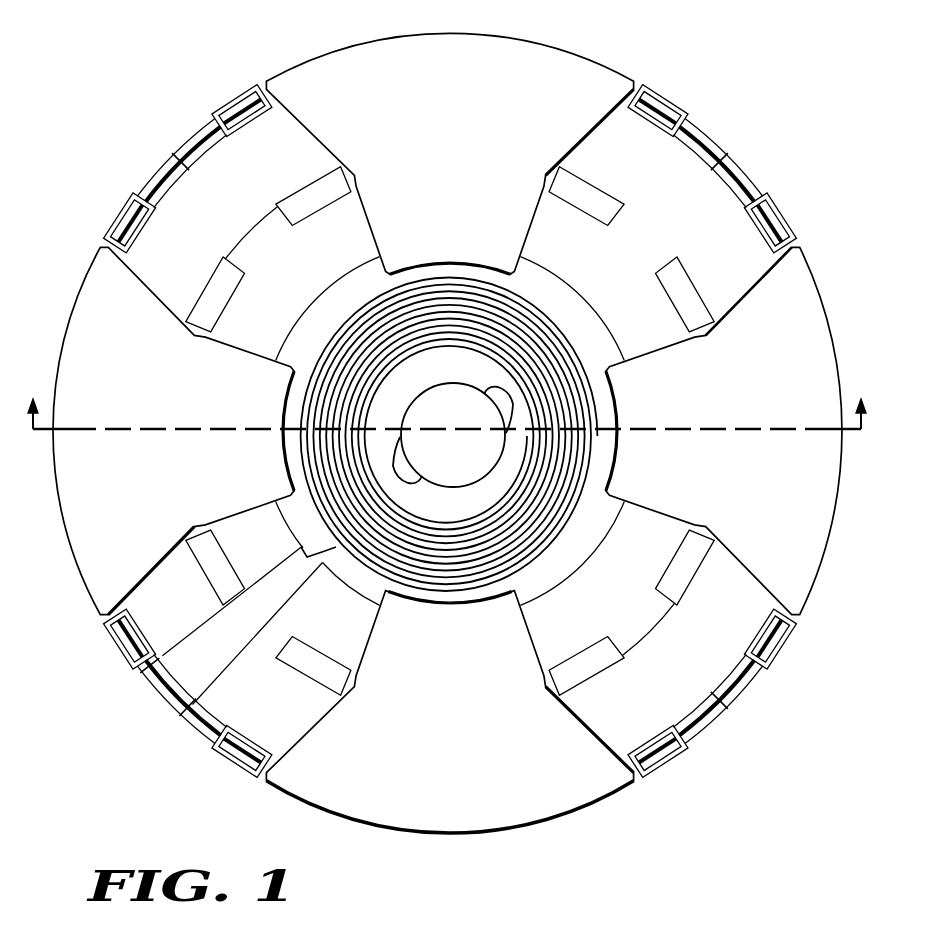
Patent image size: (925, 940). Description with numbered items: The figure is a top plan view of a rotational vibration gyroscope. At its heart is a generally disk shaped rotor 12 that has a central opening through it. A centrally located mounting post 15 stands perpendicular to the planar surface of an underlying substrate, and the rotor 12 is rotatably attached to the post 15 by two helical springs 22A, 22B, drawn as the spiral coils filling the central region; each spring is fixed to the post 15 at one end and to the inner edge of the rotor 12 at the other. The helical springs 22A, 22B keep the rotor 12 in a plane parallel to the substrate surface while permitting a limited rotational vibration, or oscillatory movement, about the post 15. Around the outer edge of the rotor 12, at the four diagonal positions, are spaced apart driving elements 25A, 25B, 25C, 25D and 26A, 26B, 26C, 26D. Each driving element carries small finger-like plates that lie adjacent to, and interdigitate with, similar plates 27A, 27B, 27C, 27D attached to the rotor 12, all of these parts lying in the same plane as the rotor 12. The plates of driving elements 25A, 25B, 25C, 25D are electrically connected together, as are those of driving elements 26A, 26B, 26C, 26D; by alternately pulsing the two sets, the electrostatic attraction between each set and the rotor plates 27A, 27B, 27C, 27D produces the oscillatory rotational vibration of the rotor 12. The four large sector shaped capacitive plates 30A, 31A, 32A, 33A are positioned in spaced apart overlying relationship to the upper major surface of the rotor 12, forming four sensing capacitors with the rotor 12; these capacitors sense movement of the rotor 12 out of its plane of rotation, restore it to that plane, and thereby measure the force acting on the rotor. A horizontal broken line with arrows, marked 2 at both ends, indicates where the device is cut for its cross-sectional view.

The rotor 12 is at (449, 438).
The mounting post 15 is at (470, 470).
The helical spring 22A is at (566, 544).
The helical spring 22B is at (328, 330).
The driving element 25A is at (236, 100).
The driving element 25B is at (782, 213).
The driving element 25C is at (665, 770).
The driving element 25D is at (118, 650).
The driving element 26A is at (118, 210).
The driving element 26B is at (668, 101).
The driving element 26C is at (780, 656).
The driving element 26D is at (237, 770).
The rotor plates 27A is at (178, 158).
The rotor plates 27B is at (723, 158).
The rotor plates 27C is at (721, 712).
The rotor plates 27D is at (182, 708).
The capacitive plate 30A is at (820, 327).
The capacitive plate 31A is at (88, 568).
The capacitive plate 32A is at (369, 50).
The capacitive plate 33A is at (525, 828).
The section line 2- 2 is at (448, 400).